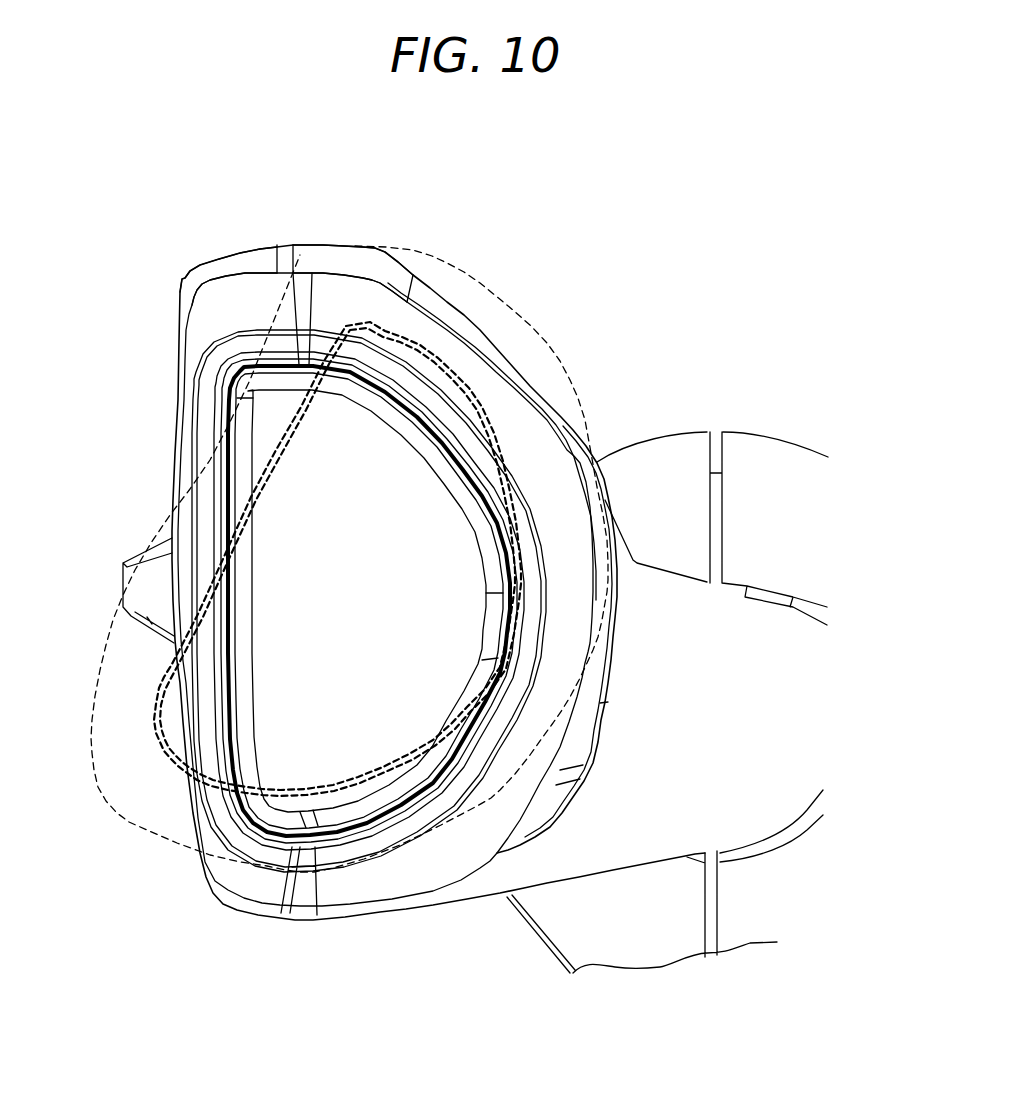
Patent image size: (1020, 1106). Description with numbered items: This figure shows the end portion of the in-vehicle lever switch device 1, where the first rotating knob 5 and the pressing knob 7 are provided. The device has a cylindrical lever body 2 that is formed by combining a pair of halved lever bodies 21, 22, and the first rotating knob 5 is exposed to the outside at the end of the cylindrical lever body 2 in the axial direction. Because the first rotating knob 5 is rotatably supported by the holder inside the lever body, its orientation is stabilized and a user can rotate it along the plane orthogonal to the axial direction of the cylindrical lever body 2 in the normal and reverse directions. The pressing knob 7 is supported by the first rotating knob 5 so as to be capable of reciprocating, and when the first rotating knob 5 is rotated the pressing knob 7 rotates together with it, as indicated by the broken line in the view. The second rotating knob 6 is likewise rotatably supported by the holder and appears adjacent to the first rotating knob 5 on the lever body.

The in-vehicle lever switch device 1 is at (623, 330).
The cylindrical lever body 2 is at (296, 256).
The halved lever body 21 is at (304, 257).
The halved lever body 22 is at (245, 265).
The first rotating knob 5 is at (217, 322).
The second rotating knob 6 is at (135, 578).
The pressing knob 7 is at (313, 520).